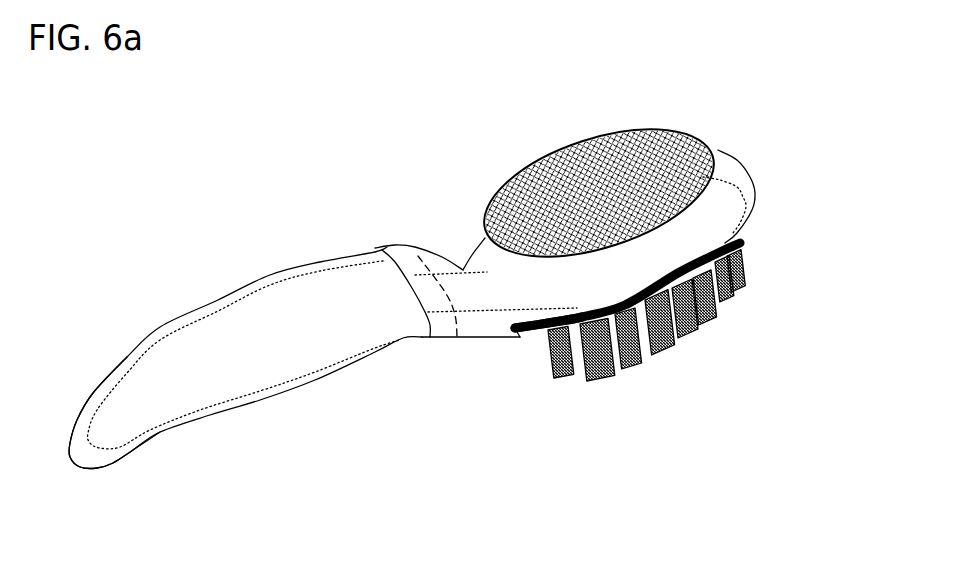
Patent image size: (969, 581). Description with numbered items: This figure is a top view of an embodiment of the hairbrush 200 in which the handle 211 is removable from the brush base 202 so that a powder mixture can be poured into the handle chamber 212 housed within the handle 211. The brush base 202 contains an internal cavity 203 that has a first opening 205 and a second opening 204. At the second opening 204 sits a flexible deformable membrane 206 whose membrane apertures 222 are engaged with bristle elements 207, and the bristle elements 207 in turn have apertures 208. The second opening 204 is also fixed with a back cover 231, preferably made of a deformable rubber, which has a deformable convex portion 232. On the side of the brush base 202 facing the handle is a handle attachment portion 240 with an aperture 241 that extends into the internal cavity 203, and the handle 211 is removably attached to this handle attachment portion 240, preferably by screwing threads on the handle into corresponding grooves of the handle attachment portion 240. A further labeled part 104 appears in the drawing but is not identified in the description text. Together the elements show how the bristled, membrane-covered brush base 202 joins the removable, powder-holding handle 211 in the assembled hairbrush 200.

The hairbrush 200 is at (132, 237).
The handle 211 is at (273, 361).
The handle chamber 212 is at (113, 423).
The handle attachment portion 240 is at (437, 222).
The aperture 241 is at (424, 337).
The second opening 204 is at (547, 248).
The brush base 202 is at (743, 158).
The head body 104 is at (718, 147).
The internal cavity 203 is at (753, 193).
The back cover 231 is at (620, 130).
The deformable convex portion 232 is at (587, 187).
The first opening 205 is at (722, 237).
The flexible deformable membrane 206 is at (528, 333).
The membrane apertures 222 is at (548, 333).
The apertures 208 is at (687, 340).
The bristle elements 207 is at (718, 318).